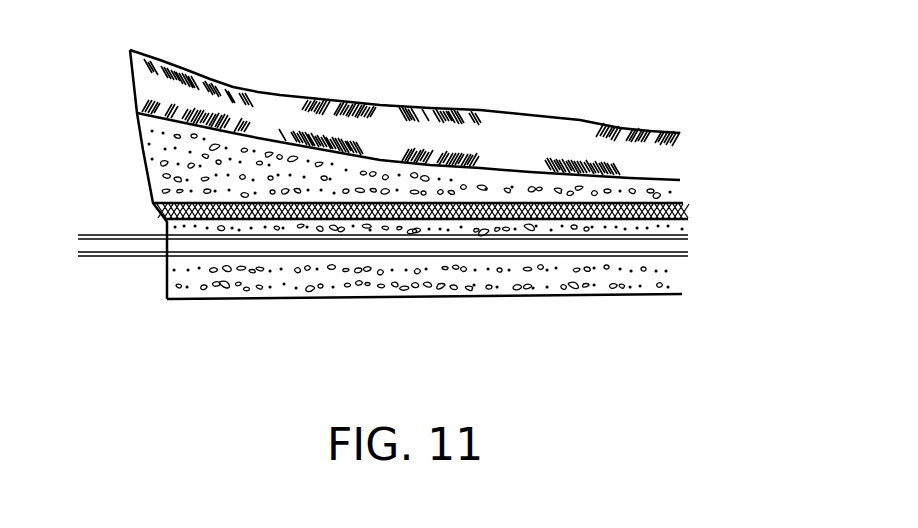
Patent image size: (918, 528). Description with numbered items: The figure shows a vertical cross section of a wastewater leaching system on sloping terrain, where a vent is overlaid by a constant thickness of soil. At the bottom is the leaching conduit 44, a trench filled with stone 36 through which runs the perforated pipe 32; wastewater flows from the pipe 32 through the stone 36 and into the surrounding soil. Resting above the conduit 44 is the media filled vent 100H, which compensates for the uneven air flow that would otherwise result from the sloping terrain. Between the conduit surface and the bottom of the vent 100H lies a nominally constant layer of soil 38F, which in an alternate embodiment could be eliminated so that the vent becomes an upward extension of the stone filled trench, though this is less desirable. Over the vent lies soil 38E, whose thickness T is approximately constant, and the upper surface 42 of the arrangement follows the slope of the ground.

The media filled vent 100H is at (137, 148).
The outer surface 42 is at (290, 93).
The soil 38E is at (545, 143).
The thickness T is at (488, 168).
The layer of soil 38F is at (680, 211).
The stone 36 is at (177, 227).
The perforated pipe 32 is at (130, 256).
The leaching conduit 44 is at (640, 303).